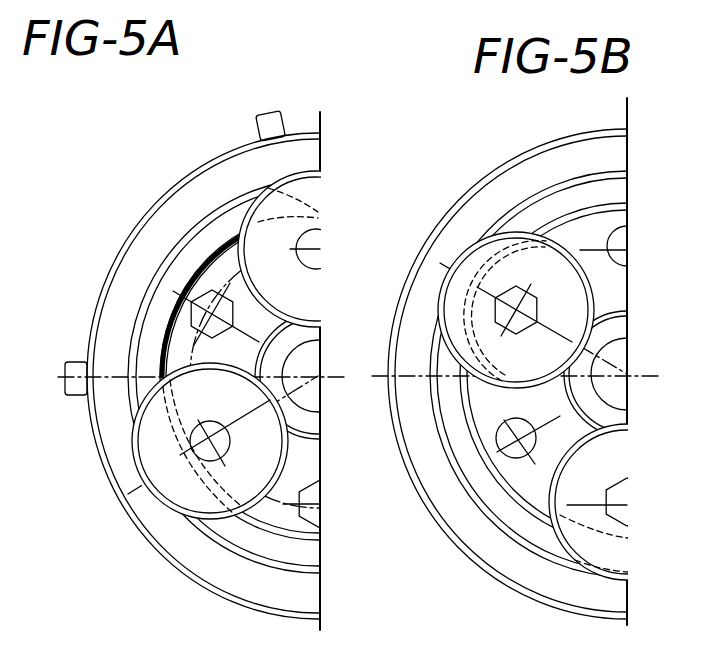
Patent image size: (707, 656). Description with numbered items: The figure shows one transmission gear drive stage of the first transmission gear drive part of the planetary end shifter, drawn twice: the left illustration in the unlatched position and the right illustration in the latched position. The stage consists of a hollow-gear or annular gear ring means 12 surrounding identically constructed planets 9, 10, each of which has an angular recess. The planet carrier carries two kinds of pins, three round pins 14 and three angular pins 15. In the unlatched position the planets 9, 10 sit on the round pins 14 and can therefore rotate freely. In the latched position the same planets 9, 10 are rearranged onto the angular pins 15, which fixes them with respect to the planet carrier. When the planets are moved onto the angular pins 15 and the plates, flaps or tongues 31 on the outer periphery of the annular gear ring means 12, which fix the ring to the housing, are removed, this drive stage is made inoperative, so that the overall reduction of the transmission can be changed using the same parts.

In FIG. 5A, the planet 9 is at (255, 190).
In FIG. 5B, the planet 9 is at (450, 292).
In FIG. 5A, the planet 10 is at (160, 493).
In FIG. 5B, the planet 10 is at (577, 507).
In FIG. 5A, the hollow-gear or annular gear ring means 12 is at (152, 202).
In FIG. 5A, the round pin 14 is at (192, 444).
In FIG. 5B, the round pin 14 is at (500, 443).
In FIG. 5A, the angular pin 15 is at (198, 293).
In FIG. 5B, the angular pin 15 is at (527, 290).
In FIG. 5A, the plate, flap or tongue 31 is at (283, 116).